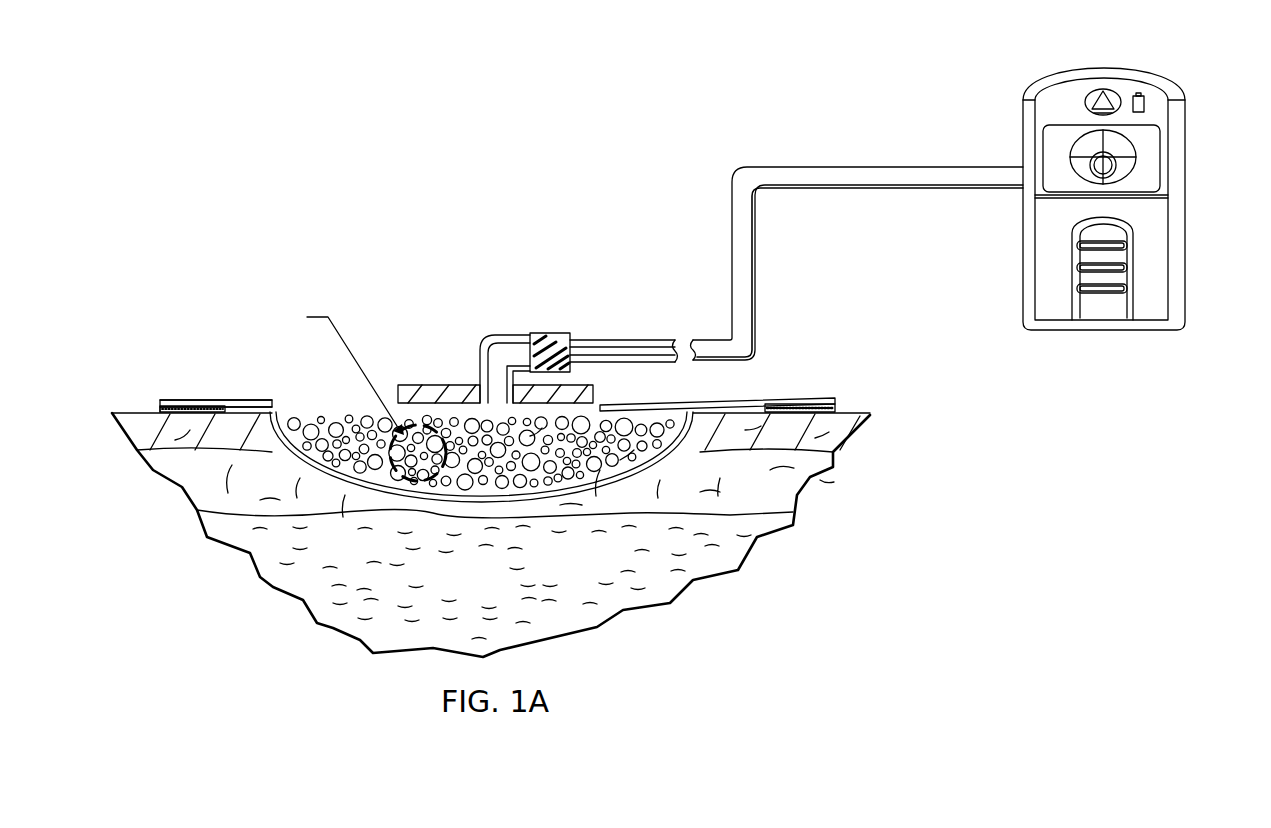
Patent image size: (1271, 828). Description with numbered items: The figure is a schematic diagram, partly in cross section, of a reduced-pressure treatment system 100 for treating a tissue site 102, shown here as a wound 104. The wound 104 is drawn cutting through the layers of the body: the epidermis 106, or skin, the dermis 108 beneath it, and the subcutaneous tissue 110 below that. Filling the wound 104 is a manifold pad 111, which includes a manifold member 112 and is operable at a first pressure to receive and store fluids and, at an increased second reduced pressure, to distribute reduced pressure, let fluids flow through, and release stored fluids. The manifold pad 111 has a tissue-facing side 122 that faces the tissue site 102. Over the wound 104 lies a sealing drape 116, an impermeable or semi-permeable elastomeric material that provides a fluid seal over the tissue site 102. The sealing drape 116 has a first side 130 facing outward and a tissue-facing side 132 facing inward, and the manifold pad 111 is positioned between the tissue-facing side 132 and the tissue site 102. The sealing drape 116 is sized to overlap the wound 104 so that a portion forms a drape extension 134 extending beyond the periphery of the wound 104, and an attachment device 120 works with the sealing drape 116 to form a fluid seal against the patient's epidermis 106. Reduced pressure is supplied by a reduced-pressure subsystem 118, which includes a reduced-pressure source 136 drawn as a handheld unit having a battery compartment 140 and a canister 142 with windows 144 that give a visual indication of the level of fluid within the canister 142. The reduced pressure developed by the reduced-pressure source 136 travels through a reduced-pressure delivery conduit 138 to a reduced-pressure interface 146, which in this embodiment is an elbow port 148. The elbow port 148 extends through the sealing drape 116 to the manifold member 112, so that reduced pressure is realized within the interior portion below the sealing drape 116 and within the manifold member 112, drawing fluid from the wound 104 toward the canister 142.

The reduced-pressure treatment system 100 is at (407, 248).
The tissue site 102 is at (300, 472).
The wound 104 is at (345, 482).
The epidermis 106 is at (122, 428).
The dermis 108 is at (800, 495).
The subcutaneous tissue 110 is at (428, 592).
The manifold pad 111 is at (510, 459).
The manifold member 112 is at (637, 468).
The sealing drape 116 is at (193, 397).
The reduced-pressure subsystem 118 is at (1108, 167).
The attachment device 120 is at (160, 408).
The tissue-facing side 122 is at (577, 500).
The first side 130 is at (627, 402).
The tissue-facing side 132 is at (272, 408).
The drape extension 134 is at (247, 397).
The reduced-pressure source 136 is at (1160, 78).
The reduced-pressure delivery conduit 138 is at (829, 166).
The battery compartment 140 is at (1050, 134).
The canister 142 is at (1152, 274).
The windows 144 is at (1077, 267).
The reduced-pressure interface 146 is at (496, 328).
The elbow port 148 is at (536, 333).